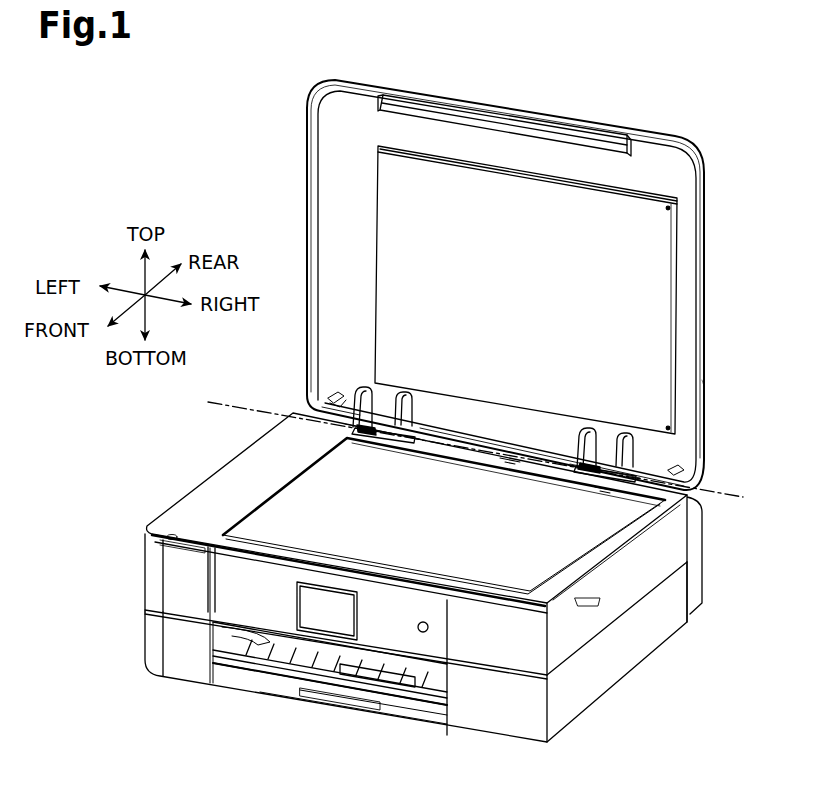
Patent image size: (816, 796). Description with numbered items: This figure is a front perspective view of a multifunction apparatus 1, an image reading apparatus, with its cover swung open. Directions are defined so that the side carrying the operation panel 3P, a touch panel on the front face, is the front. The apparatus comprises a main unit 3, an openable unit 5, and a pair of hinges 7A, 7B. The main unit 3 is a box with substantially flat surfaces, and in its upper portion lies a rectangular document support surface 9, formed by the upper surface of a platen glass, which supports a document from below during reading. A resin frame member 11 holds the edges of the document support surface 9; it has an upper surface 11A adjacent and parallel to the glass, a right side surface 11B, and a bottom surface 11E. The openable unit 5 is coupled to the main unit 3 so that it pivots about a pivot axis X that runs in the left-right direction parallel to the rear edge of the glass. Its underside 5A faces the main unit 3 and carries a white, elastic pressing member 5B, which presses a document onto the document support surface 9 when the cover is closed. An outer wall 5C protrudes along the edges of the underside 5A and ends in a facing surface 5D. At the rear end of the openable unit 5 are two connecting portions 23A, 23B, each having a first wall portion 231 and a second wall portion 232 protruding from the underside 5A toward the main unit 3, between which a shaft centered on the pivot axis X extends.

The multifunction apparatus 1 is at (722, 384).
The main unit 3 is at (427, 653).
The operation panel 3P is at (338, 620).
The openable unit 5 is at (460, 285).
The underside 5A is at (345, 120).
The pressing member 5B is at (637, 230).
The outer wall 5C is at (318, 212).
The facing surface 5D is at (300, 372).
The hinge 7A is at (592, 447).
The hinge 7B is at (378, 430).
The first wall portion 231 is at (406, 398).
The second wall portion 232 is at (356, 398).
The connecting portion 23A is at (572, 441).
The connecting portion 23B is at (420, 424).
The document support surface 9 is at (428, 529).
The frame member 11 is at (455, 546).
The upper surface 11A is at (268, 460).
The right side surface 11B is at (700, 512).
The bottom surface 11E is at (598, 600).
The pivot axis X is at (468, 441).